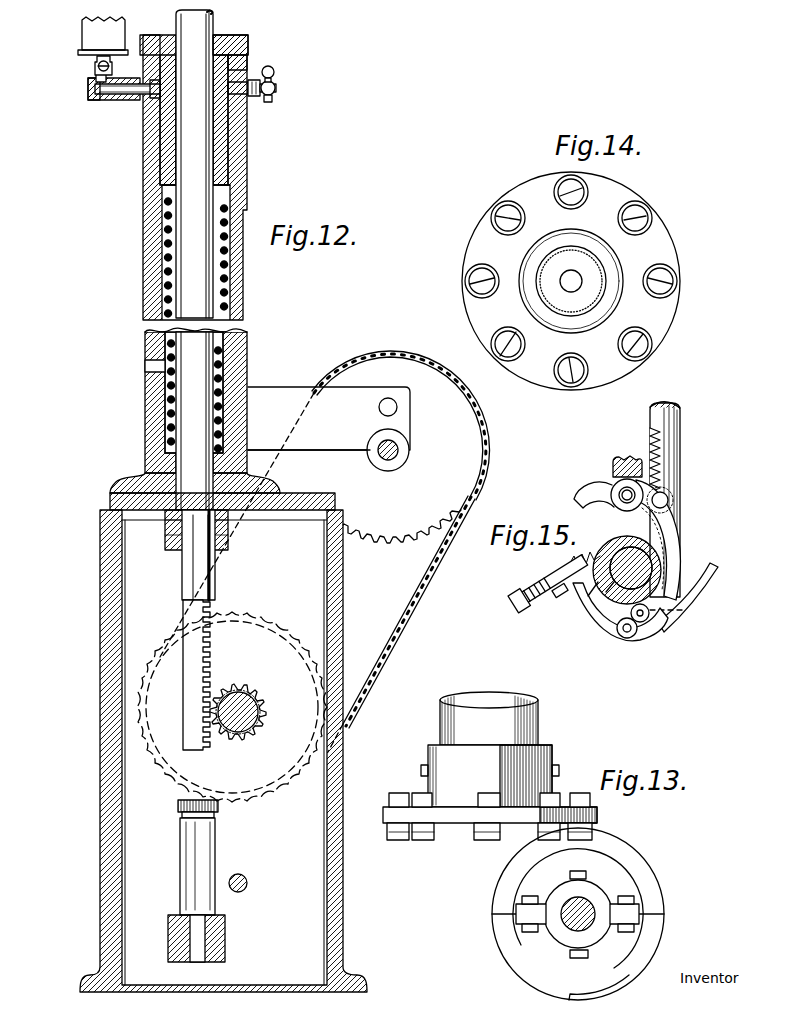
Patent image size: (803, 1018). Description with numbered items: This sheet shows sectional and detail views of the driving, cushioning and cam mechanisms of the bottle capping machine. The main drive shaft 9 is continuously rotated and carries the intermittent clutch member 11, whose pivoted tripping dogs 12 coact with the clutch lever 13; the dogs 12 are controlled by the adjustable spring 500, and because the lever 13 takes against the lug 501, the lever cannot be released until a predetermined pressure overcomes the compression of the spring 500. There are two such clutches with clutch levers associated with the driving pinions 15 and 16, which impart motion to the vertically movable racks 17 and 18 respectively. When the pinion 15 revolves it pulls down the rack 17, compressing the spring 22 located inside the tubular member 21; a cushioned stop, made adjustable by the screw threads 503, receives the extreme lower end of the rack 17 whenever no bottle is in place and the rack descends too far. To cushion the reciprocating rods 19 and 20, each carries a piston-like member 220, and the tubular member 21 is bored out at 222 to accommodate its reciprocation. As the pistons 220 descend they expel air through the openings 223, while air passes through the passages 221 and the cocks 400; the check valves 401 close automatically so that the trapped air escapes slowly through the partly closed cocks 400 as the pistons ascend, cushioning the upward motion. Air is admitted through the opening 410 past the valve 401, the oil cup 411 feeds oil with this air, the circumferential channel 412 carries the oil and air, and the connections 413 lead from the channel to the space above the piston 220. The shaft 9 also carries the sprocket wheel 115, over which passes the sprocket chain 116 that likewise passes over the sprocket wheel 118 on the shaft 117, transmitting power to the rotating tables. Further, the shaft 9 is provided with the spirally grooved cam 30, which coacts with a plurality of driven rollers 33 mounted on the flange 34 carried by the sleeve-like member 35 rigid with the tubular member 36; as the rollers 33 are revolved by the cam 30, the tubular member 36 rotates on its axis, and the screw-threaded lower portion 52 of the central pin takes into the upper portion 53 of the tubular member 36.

In FIG. 12, the main drive shaft 9 is at (240, 716).
In FIG. 15, the main drive shaft 9 is at (640, 566).
In FIG. 13, the main drive shaft 9 is at (568, 914).
In FIG. 15, the intermittent clutch member 11 is at (602, 602).
In FIG. 15, the tripping dogs 12 is at (612, 492).
In FIG. 15, the clutch lever 13 is at (626, 460).
In FIG. 12, the driving pinion 15 is at (223, 742).
In FIG. 12, the driving pinion 16 is at (262, 694).
In FIG. 15, the rack 17 is at (652, 450).
In FIG. 12, the rack 18 is at (213, 662).
In FIG. 15, the reciprocating rod 19 is at (682, 425).
In FIG. 12, the reciprocating rod 20 is at (198, 228).
In FIG. 12, the tubular member 21 is at (148, 288).
In FIG. 12, the spring 22 is at (150, 344).
In FIG. 13, the spirally grooved cam 30 is at (612, 875).
In FIG. 14, the driven rollers 33 is at (626, 234).
In FIG. 13, the driven rollers 33 is at (420, 842).
In FIG. 14, the flange 34 is at (652, 316).
In FIG. 13, the flange 34 is at (460, 826).
In FIG. 14, the sleeve-like member 35 is at (540, 262).
In FIG. 13, the sleeve-like member 35 is at (450, 751).
In FIG. 13, the tubular member 36 is at (538, 712).
In FIG. 14, the screw-threaded lower portion 52 is at (568, 286).
In FIG. 14, the upper portion 53 is at (552, 283).
In FIG. 12, the sprocket wheel 115 is at (280, 615).
In FIG. 12, the sprocket chain 116 is at (398, 636).
In FIG. 12, the shaft 117 is at (378, 447).
In FIG. 12, the sprocket wheel 118 is at (378, 522).
In FIG. 12, the piston-like member 220 is at (168, 178).
In FIG. 12, the passages 221 is at (117, 101).
In FIG. 12, the bore 222 is at (165, 258).
In FIG. 12, the openings 223 is at (152, 372).
In FIG. 12, the cocks 400 is at (276, 86).
In FIG. 12, the check valves 401 is at (88, 95).
In FIG. 12, the opening 410 is at (96, 66).
In FIG. 12, the oil cup 411 is at (82, 36).
In FIG. 12, the circumferential channel 412 is at (160, 36).
In FIG. 12, the connections 413 is at (236, 36).
In FIG. 15, the adjustable spring 500 is at (570, 563).
In FIG. 15, the lug 501 is at (616, 486).
In FIG. 12, the screw threads 503 is at (215, 812).